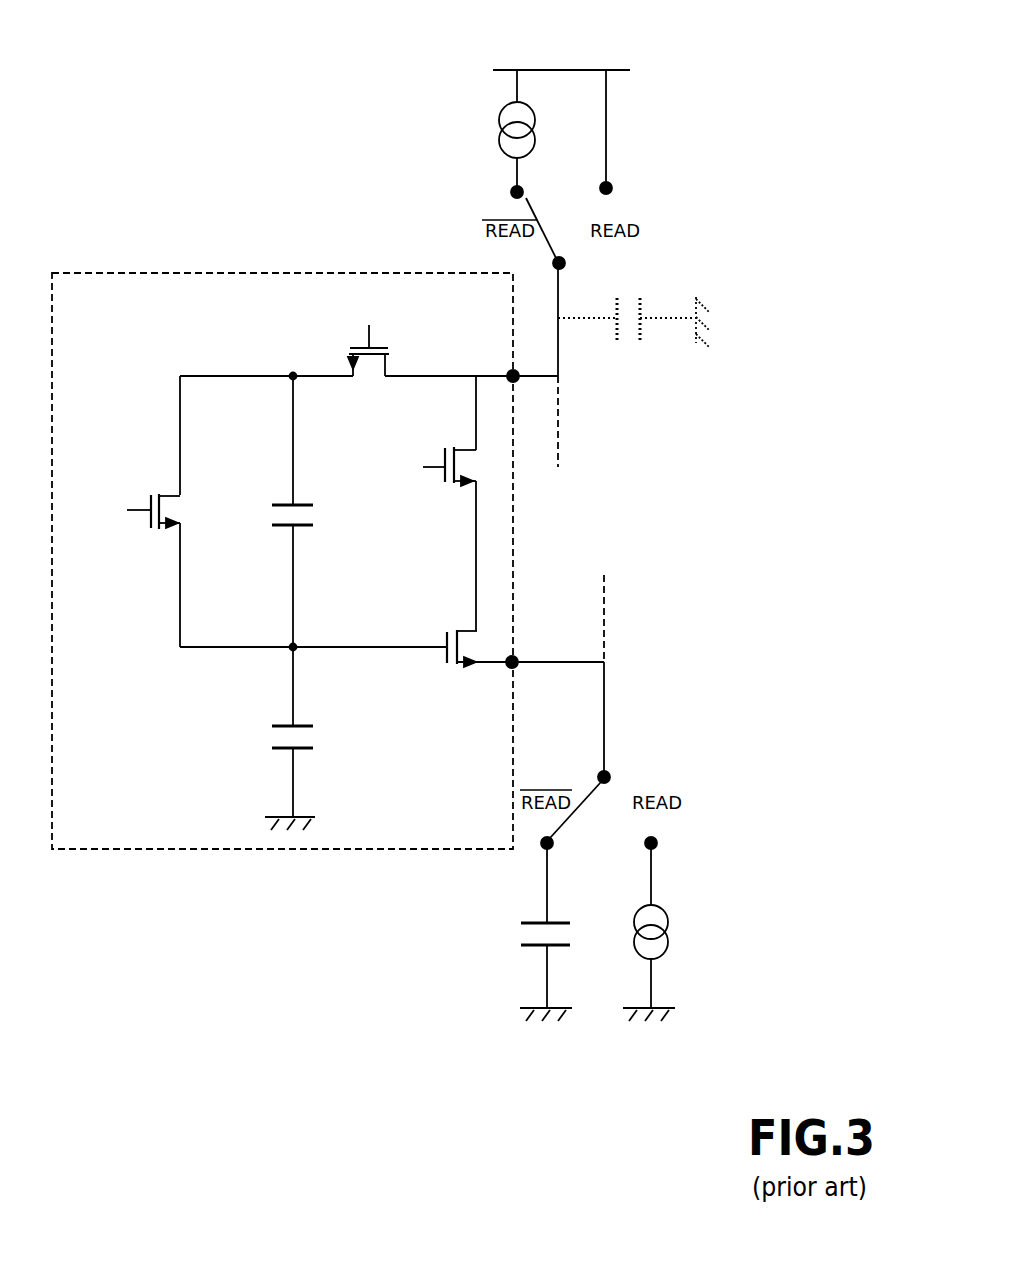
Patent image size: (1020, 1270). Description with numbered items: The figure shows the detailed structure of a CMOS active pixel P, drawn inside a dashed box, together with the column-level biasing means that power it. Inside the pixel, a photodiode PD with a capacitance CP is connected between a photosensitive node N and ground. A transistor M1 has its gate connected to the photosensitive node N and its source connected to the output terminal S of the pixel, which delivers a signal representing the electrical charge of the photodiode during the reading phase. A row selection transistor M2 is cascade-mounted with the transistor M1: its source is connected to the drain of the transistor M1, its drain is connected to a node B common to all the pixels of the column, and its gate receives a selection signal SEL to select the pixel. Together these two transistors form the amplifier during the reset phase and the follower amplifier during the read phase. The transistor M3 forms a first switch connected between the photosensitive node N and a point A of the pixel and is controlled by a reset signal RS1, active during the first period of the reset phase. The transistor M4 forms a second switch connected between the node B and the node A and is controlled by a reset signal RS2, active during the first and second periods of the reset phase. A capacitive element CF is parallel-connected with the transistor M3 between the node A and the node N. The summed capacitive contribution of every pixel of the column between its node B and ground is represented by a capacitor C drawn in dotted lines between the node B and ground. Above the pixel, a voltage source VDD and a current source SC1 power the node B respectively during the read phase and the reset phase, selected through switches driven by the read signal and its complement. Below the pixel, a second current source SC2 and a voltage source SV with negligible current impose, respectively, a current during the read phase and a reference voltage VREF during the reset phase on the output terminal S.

The voltage source VDD is at (561, 55).
The current source SC1 is at (500, 137).
The second current source SC2 is at (670, 920).
The capacitor C is at (632, 337).
The CMOS active pixel P is at (159, 851).
The point A is at (288, 372).
The node B is at (508, 371).
The photosensitive node N is at (290, 646).
The output terminal S is at (517, 656).
The transistor M1 is at (476, 630).
The row selection transistor M2 is at (460, 465).
The transistor M3 is at (165, 510).
The transistor M4 is at (368, 358).
The reset signal RS1 is at (112, 510).
The reset signal RS2 is at (369, 323).
The selection signal SEL is at (411, 467).
The capacitive element CF is at (279, 527).
The capacitance CP is at (278, 749).
The photodiode PD is at (294, 738).
The voltage source SV is at (535, 948).
The reference voltage VREF is at (473, 932).